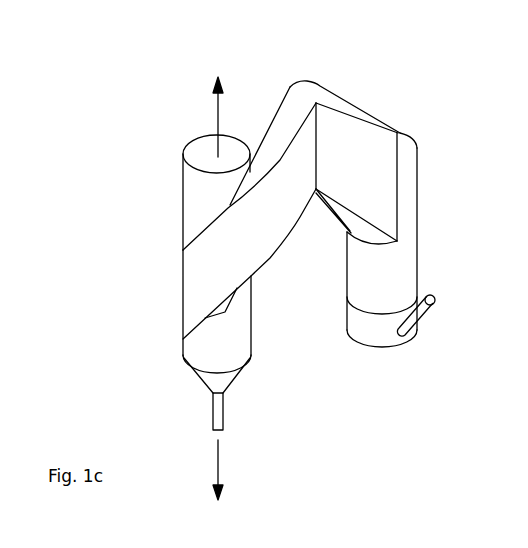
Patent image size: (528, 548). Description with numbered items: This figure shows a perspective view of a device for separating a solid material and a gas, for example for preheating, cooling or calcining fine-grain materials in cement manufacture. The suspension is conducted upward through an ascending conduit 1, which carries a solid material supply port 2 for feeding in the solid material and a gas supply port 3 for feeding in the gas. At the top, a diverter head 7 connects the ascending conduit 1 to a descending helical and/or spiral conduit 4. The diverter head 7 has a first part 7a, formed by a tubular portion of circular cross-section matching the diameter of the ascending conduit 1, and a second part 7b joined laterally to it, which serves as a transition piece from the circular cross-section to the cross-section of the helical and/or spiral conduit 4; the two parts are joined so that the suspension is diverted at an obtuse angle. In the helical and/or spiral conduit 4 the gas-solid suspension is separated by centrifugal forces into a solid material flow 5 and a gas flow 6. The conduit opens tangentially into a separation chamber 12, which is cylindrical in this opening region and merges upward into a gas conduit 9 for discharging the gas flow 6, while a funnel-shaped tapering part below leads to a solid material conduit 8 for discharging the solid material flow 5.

The ascending conduit 1 is at (373, 325).
The solid material supply port 2 is at (435, 299).
The gas supply port 3 is at (405, 366).
The helical and/or spiral conduit 4 is at (278, 177).
The solid material flow 5 is at (223, 470).
The gas flow 6 is at (213, 110).
The diverter head 7 is at (388, 173).
The first part of the diverter head 7a is at (400, 265).
The second part of the diverter head 7b is at (343, 140).
The solid material conduit 8 is at (213, 412).
The gas conduit 9 is at (195, 188).
The separation chamber 12 is at (232, 335).